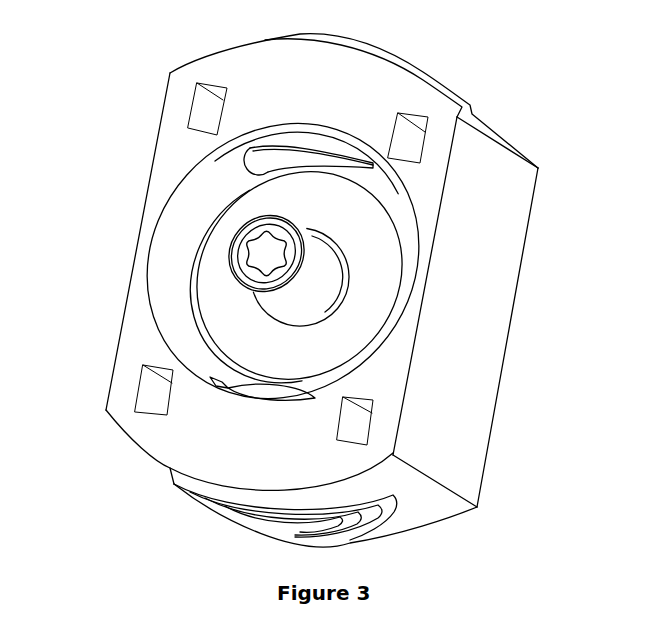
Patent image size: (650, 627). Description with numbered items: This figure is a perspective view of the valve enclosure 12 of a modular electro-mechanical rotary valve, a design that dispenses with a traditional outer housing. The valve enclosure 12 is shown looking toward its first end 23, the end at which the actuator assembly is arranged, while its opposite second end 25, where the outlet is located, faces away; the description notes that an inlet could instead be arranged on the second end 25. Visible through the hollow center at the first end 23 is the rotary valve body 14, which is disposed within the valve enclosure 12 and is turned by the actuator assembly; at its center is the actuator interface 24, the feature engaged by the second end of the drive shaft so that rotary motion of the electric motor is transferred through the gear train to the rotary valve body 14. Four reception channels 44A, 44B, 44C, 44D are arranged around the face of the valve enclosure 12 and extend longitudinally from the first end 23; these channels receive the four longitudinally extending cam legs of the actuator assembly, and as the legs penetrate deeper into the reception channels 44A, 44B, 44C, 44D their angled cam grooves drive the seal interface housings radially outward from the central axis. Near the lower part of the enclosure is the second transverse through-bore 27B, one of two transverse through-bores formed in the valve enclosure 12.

The valve enclosure 12 is at (541, 115).
The rotary valve body 14 is at (226, 238).
The first end 23 is at (163, 157).
The actuator interface 24 is at (263, 247).
The second end 25 is at (517, 302).
The second transverse through-bore 27B is at (400, 502).
The first reception channel 44A is at (205, 108).
The second reception channel 44B is at (413, 144).
The third reception channel 44C is at (152, 393).
The fourth reception channel 44D is at (360, 427).